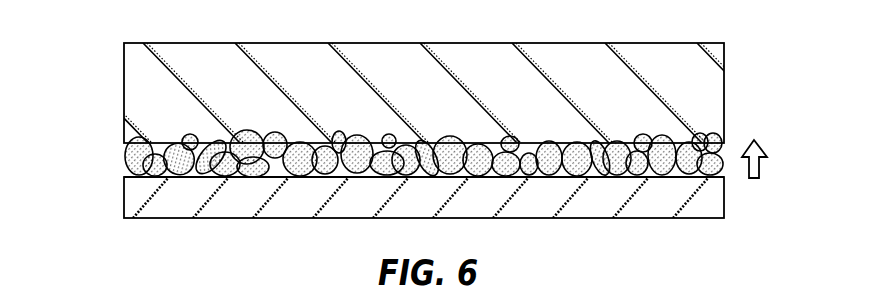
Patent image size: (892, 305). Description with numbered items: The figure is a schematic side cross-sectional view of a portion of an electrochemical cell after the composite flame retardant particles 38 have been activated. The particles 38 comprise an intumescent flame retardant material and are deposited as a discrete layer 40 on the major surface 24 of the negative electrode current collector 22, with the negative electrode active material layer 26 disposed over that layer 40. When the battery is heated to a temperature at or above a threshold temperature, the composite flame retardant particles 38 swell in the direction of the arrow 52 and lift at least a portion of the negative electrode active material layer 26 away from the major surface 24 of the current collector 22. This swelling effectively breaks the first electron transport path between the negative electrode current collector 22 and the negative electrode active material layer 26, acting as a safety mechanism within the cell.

The negative electrode current collector 22 is at (123, 199).
The major surface 24 is at (675, 177).
The negative electrode active material layer 26 is at (124, 98).
The composite flame retardant particles 38 is at (342, 130).
The discrete layer 40 is at (378, 90).
The arrow 52 is at (762, 165).